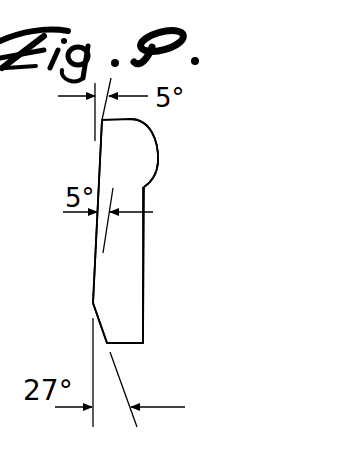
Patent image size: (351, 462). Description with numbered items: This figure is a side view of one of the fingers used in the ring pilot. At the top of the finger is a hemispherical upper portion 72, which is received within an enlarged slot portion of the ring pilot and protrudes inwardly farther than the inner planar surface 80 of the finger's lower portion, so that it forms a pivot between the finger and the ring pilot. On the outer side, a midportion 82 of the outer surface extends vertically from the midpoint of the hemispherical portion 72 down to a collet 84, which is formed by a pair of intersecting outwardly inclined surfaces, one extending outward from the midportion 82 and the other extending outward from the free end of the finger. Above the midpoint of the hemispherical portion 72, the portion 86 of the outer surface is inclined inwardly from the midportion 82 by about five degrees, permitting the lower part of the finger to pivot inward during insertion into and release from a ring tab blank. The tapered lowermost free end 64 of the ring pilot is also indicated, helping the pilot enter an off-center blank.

The lowermost free end 64 is at (75, 277).
The hemispherical upper portion 72 is at (140, 152).
The inner planar surface 80 is at (145, 258).
The midportion of the outer surface 82 is at (97, 225).
The collet 84 is at (92, 305).
The inclined portion of the outer surface 86 is at (101, 141).